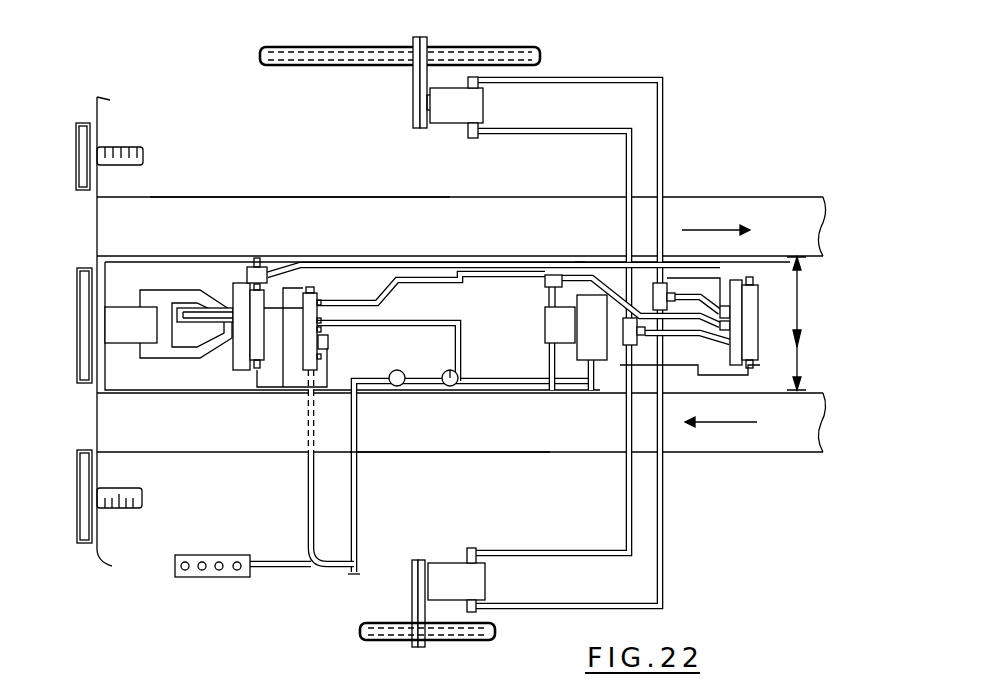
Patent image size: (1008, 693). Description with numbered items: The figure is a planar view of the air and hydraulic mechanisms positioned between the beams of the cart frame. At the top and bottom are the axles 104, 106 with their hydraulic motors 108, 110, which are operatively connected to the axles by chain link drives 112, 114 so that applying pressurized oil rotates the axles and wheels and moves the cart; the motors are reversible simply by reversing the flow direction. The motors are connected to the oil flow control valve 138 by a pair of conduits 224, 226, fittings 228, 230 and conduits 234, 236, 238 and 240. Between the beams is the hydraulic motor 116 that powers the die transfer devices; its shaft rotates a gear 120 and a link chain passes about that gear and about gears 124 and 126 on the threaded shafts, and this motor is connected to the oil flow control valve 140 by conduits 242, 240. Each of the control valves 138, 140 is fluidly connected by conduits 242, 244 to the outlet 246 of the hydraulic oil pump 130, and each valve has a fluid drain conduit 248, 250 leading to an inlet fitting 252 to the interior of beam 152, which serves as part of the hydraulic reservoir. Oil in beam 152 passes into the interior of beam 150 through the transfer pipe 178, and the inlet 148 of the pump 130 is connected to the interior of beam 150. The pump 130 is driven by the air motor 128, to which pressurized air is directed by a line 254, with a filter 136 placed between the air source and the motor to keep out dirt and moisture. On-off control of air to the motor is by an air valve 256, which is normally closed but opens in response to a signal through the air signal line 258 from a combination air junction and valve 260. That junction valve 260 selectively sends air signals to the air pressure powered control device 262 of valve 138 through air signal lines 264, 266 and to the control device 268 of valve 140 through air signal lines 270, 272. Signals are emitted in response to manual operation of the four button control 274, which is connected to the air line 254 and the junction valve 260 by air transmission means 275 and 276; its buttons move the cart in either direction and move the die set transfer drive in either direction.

The axle 104 is at (462, 636).
The axle 106 is at (332, 47).
The hydraulic motor 108 is at (450, 563).
The hydraulic motor 110 is at (450, 124).
The chain link drive 112 is at (410, 603).
The chain link drive 114 is at (412, 82).
The hydraulic motor 116 is at (128, 302).
The gear 120 is at (79, 332).
The gear 124 is at (77, 496).
The gear 126 is at (76, 168).
The air motor 128 is at (606, 365).
The hydraulic pump 130 is at (545, 325).
The air filter 136 is at (397, 388).
The oil flow control valve 138 is at (742, 318).
The oil flow control valve 140 is at (232, 382).
The pump inlet 148 is at (548, 356).
The beam 150 is at (419, 447).
The beam 152 is at (288, 198).
The transfer conduit 178 is at (800, 382).
The conduit 224 is at (700, 300).
The conduit 226 is at (703, 328).
The fitting 228 is at (668, 296).
The fitting 230 is at (581, 262).
The conduit 234 is at (662, 141).
The conduit 236 is at (650, 96).
The conduit 238 is at (668, 512).
The conduit 240 is at (160, 262).
The conduit 242 is at (160, 360).
The conduit 244 is at (190, 350).
The pump outlet 246 is at (545, 292).
The fluid drain conduit 248 is at (668, 287).
The fluid drain conduit 250 is at (250, 266).
The inlet fitting 252 is at (266, 266).
The air line 254 is at (358, 478).
The air valve 256 is at (451, 388).
The air signal line 258 is at (400, 332).
The air junction valve 260 is at (322, 290).
The air pressure powered control device 262 is at (752, 335).
The air signal line 264 is at (750, 278).
The air signal line 266 is at (722, 378).
The air pressure powered control device 268 is at (257, 374).
The air signal line 270 is at (328, 350).
The air signal line 272 is at (310, 386).
The four button control 274 is at (200, 581).
The air transmission means 275 is at (316, 570).
The air transmission means 276 is at (304, 488).